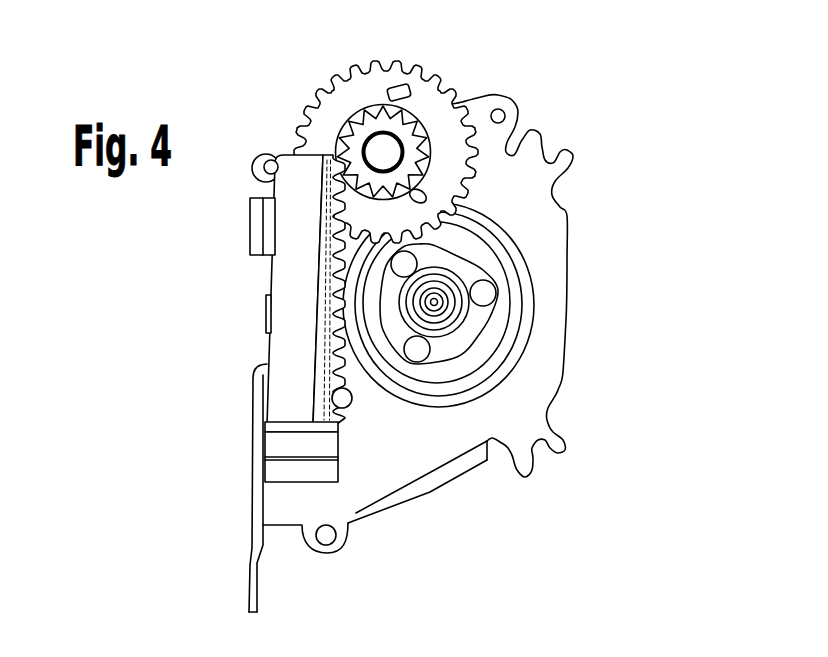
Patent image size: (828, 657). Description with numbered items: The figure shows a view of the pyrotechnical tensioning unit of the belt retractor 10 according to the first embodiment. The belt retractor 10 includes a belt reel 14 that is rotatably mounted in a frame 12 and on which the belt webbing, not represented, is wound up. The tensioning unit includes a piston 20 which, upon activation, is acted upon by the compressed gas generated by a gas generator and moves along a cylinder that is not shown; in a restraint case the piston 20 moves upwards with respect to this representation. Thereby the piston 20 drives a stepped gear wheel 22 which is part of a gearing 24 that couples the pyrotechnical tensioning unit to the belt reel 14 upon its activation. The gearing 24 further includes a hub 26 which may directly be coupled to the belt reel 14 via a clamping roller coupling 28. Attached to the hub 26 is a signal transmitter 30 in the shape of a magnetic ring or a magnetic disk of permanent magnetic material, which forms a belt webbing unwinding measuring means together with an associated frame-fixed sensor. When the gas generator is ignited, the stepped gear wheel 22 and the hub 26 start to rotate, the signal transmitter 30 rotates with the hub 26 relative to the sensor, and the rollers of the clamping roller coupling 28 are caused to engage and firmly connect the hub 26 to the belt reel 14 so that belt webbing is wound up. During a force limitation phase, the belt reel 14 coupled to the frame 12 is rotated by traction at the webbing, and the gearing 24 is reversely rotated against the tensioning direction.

The belt retractor 10 is at (614, 141).
The frame 12 is at (255, 589).
The belt reel 14 is at (445, 320).
The piston 20 is at (293, 280).
The stepped gear wheel 22 is at (380, 128).
The gearing 24 is at (308, 78).
The hub 26 is at (484, 315).
The clamping roller coupling 28 is at (477, 317).
The signal transmitter 30 is at (467, 353).